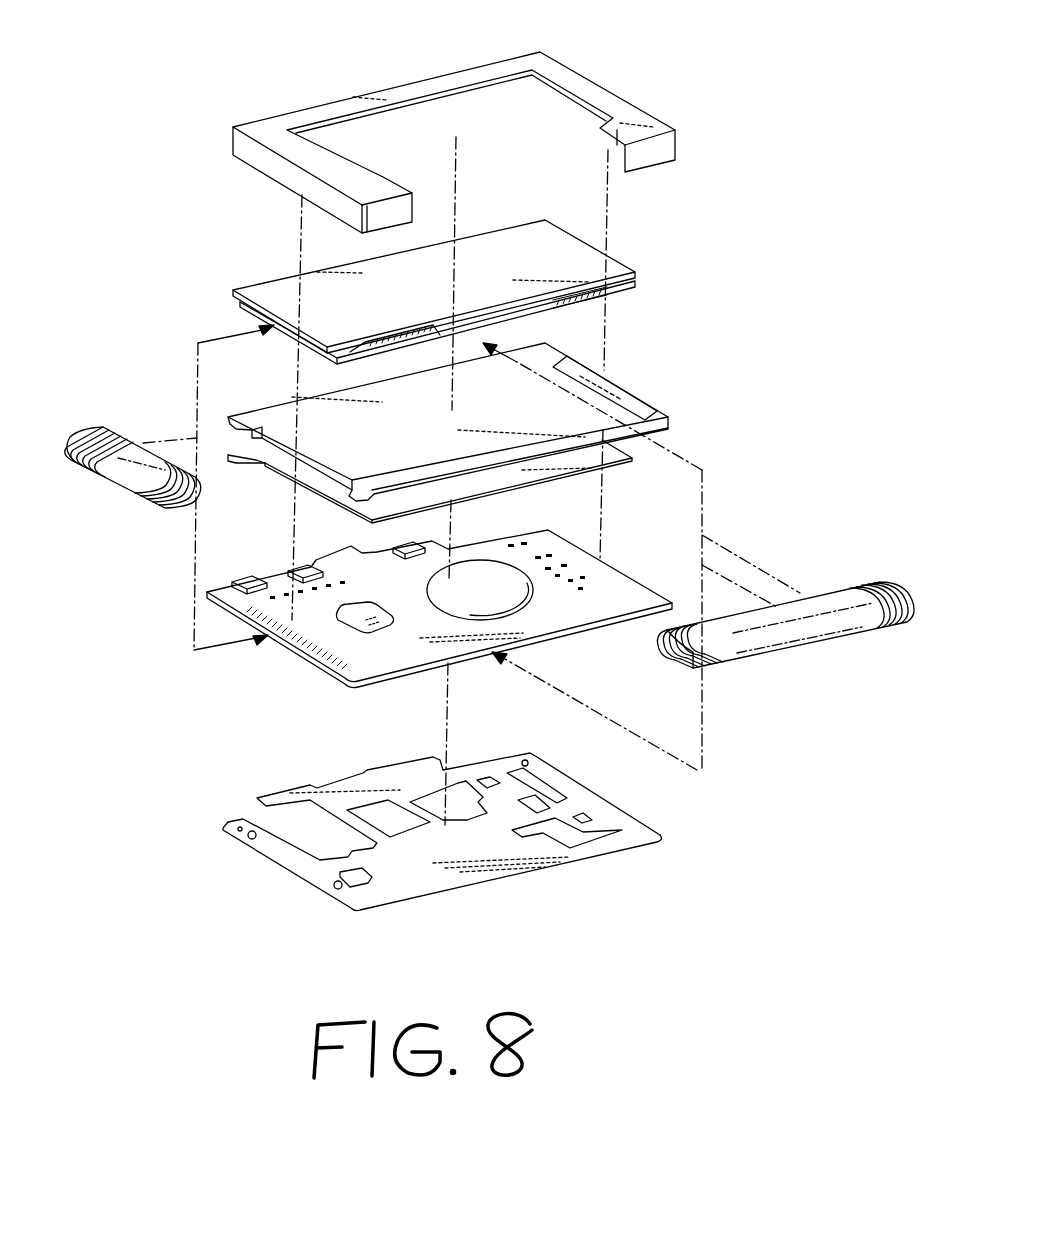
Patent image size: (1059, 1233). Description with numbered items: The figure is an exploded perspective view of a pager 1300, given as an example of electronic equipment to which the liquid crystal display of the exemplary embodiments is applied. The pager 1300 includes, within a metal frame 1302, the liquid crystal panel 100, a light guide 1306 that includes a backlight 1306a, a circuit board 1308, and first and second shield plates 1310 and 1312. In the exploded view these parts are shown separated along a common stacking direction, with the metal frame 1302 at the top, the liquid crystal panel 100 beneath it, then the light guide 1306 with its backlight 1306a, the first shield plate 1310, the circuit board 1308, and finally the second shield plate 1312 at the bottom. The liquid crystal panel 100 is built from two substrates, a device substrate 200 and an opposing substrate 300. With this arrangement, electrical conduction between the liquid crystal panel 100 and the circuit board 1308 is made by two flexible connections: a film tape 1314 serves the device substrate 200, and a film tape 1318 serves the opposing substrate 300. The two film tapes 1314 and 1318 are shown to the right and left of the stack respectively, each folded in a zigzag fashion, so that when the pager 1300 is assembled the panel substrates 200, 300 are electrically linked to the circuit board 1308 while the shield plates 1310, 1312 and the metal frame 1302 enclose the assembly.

The pager 1300 is at (379, 34).
The metal frame 1302 is at (637, 113).
The liquid crystal panel 100 is at (480, 288).
The opposing substrate 300 is at (625, 265).
The device substrate 200 is at (613, 303).
The light guide 1306 is at (494, 422).
The backlight 1306a is at (607, 375).
The first shield plate 1310 is at (603, 457).
The film tape 1318 is at (118, 480).
The circuit board 1308 is at (363, 662).
The film tape 1314 is at (805, 637).
The second shield plate 1312 is at (636, 824).